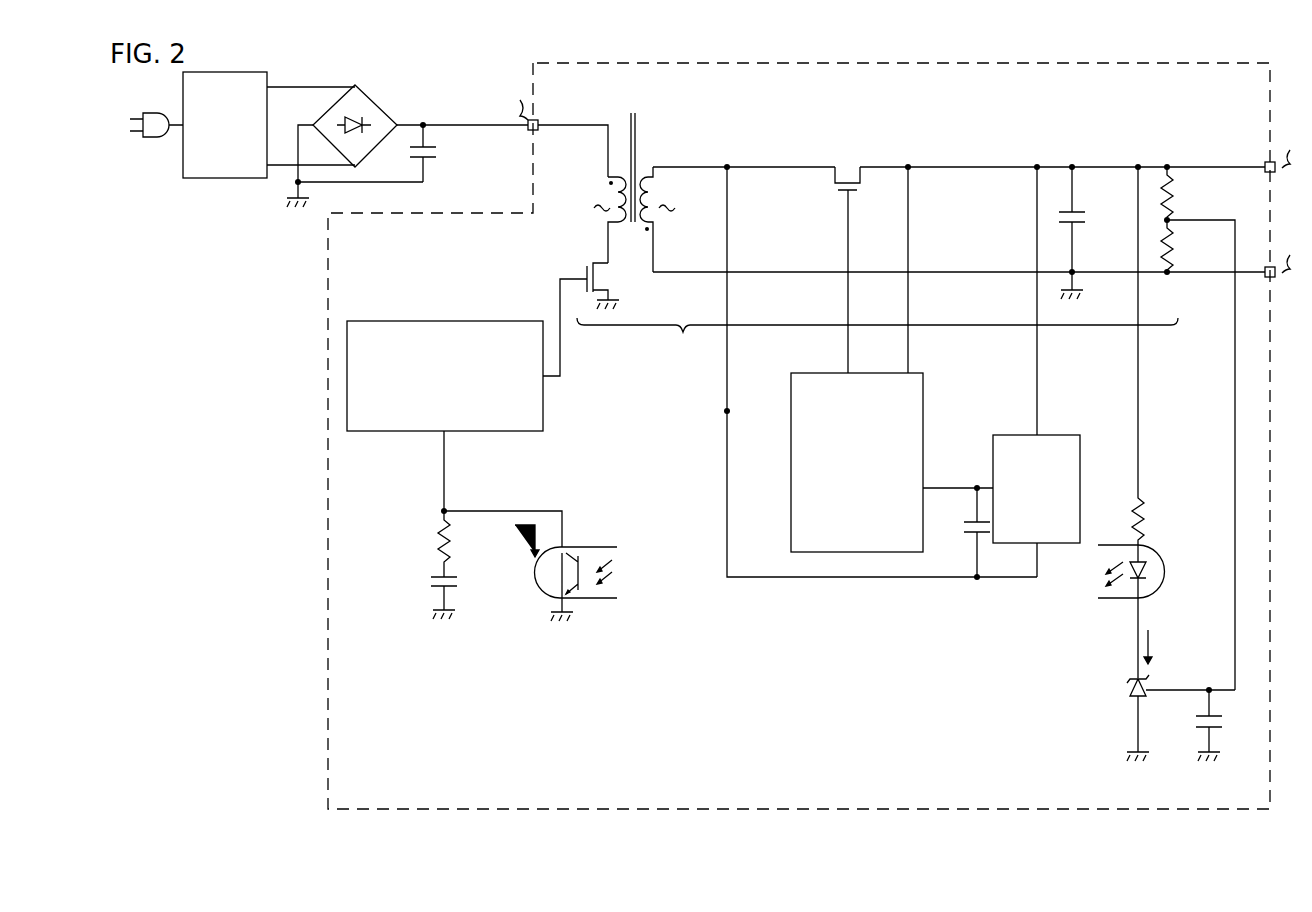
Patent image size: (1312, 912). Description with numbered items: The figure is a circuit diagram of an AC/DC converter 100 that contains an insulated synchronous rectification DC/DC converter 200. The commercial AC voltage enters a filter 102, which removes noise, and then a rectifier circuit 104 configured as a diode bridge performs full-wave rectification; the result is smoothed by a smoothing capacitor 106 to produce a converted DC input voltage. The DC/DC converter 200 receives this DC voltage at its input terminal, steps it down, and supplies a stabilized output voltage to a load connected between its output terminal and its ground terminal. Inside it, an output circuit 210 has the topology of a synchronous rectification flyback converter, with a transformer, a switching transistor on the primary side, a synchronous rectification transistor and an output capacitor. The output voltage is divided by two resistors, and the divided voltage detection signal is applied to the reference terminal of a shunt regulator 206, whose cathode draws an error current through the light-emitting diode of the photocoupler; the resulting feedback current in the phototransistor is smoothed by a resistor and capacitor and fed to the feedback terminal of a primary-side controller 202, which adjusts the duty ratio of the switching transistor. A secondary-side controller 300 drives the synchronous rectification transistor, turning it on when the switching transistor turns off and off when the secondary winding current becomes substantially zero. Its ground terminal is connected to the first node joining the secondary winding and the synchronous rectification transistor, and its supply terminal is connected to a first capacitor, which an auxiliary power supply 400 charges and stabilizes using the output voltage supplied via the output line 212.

The AC/DC converter 100 is at (226, 796).
The filter 102 is at (210, 84).
The rectifier circuit 104 is at (378, 110).
The smoothing capacitor 106 is at (455, 153).
The DC/DC converter 200 is at (945, 63).
The primary-side controller 202 is at (460, 312).
The shunt regulator 206 is at (1103, 718).
The output circuit 210 is at (877, 341).
The output line 212 is at (1206, 415).
The secondary-side controller 300 is at (791, 432).
The auxiliary power supply 400 is at (1080, 462).